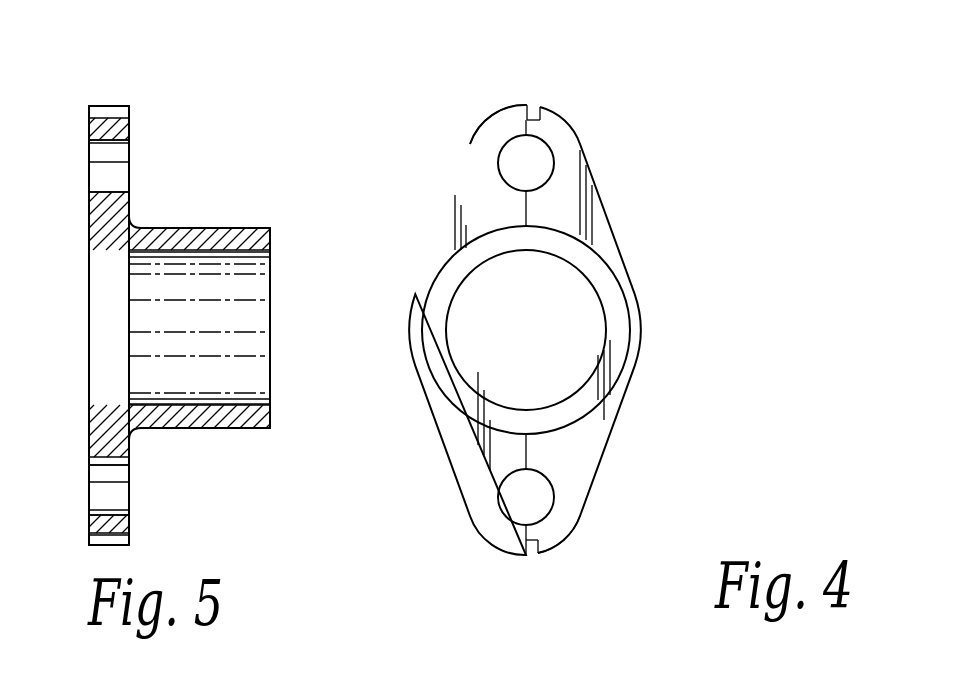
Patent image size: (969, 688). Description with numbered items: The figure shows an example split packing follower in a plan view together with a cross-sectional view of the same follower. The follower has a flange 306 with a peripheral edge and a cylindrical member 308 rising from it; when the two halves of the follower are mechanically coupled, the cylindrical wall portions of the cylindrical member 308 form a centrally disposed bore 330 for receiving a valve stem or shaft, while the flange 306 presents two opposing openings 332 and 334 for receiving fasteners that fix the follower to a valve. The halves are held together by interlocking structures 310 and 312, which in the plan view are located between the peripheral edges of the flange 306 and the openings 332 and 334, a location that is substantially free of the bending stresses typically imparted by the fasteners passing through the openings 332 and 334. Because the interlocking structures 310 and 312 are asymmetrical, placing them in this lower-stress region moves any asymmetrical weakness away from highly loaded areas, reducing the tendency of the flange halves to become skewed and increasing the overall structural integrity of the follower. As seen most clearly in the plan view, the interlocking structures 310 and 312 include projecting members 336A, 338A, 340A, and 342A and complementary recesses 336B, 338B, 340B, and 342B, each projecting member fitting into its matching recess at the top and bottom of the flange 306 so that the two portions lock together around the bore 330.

In FIG. 5, the flange 306 is at (88, 427).
In FIG. 4, the flange 306 is at (563, 205).
In FIG. 5, the cylindrical member 308 is at (260, 242).
In FIG. 4, the cylindrical member 308 is at (607, 280).
In FIG. 4, the interlocking structure 310 is at (528, 85).
In FIG. 4, the interlocking structure 312 is at (547, 563).
In FIG. 5, the bore 330 is at (235, 288).
In FIG. 4, the bore 330 is at (565, 328).
In FIG. 5, the opening 332 is at (120, 503).
In FIG. 4, the opening 332 is at (532, 492).
In FIG. 5, the opening 334 is at (117, 157).
In FIG. 4, the opening 334 is at (518, 170).
In FIG. 4, the projecting member 336A is at (523, 112).
In FIG. 4, the recess 336B is at (538, 112).
In FIG. 4, the projecting member 338A is at (537, 128).
In FIG. 4, the recess 338B is at (520, 128).
In FIG. 4, the projecting member 340A is at (530, 535).
In FIG. 4, the recess 340B is at (518, 540).
In FIG. 4, the projecting member 342A is at (522, 557).
In FIG. 4, the recess 342B is at (543, 542).